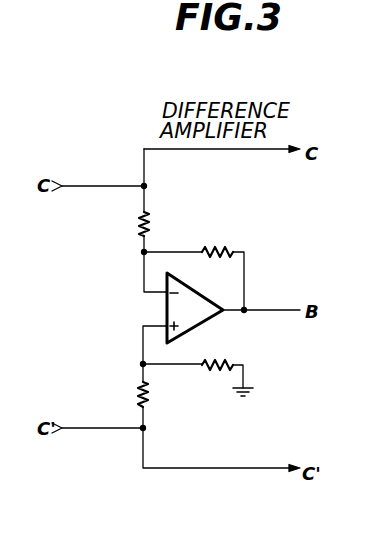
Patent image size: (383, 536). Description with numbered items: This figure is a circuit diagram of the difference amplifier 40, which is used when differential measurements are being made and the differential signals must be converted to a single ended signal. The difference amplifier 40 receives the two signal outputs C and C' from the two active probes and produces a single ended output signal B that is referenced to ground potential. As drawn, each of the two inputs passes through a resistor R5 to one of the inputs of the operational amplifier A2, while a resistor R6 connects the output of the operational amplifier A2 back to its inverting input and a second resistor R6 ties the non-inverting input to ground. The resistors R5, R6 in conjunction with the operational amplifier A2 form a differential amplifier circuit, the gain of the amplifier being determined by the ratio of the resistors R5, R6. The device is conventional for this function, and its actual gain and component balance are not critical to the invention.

The difference amplifier 40 is at (250, 254).
The resistor R5 is at (128, 309).
The resistor R6 is at (217, 292).
The operational amplifier A2 is at (195, 308).